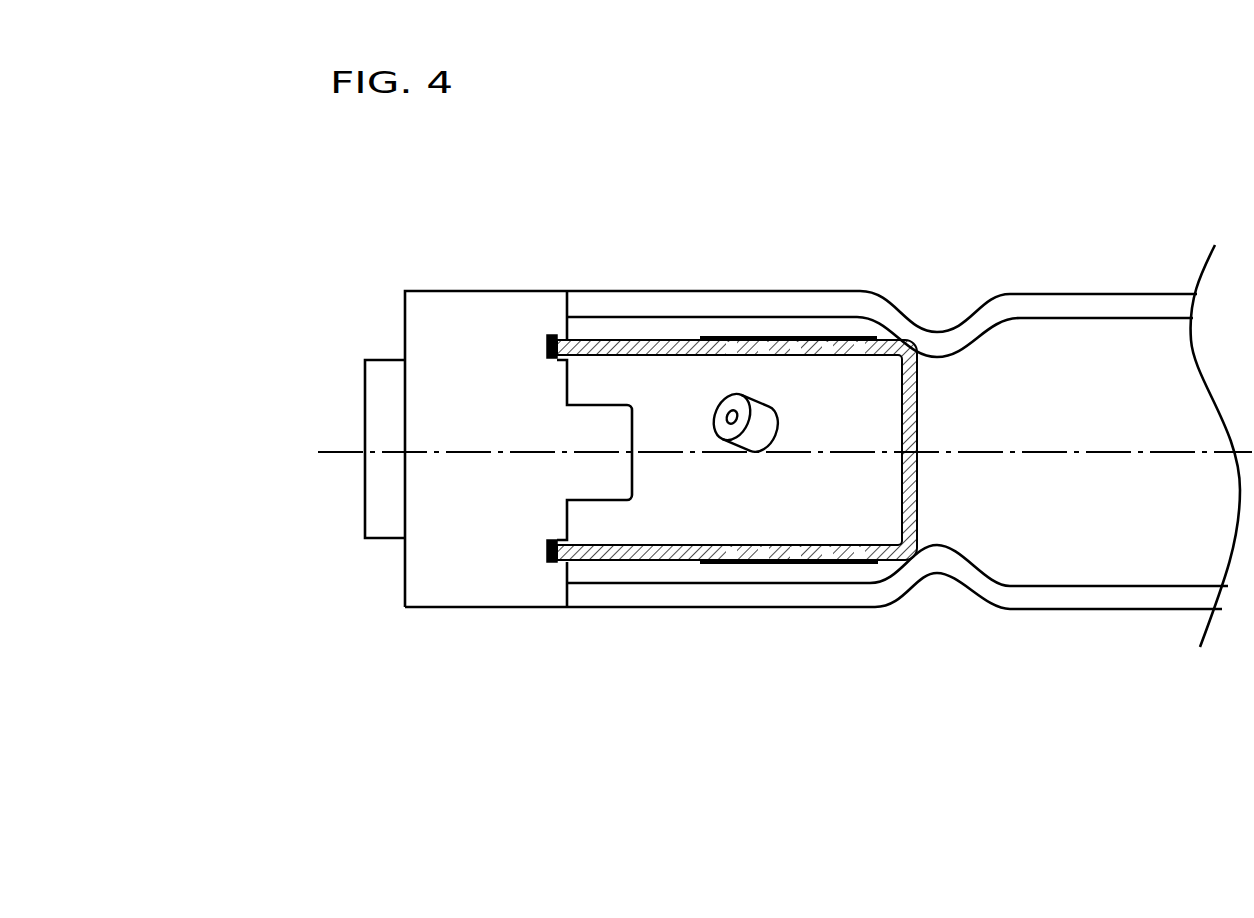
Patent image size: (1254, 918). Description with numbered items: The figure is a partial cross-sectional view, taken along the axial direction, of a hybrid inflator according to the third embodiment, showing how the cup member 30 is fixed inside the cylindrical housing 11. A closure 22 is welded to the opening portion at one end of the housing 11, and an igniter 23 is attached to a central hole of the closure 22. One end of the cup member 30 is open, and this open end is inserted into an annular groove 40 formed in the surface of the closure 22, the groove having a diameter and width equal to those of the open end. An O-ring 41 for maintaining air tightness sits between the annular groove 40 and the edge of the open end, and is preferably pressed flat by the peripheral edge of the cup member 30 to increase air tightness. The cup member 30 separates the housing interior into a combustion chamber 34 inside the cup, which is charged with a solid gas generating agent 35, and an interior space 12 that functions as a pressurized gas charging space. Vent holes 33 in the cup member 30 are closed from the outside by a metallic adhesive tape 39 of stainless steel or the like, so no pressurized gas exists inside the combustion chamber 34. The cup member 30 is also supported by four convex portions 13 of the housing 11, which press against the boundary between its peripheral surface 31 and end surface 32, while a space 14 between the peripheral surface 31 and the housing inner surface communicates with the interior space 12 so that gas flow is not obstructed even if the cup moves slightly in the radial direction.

The cylindrical housing 11 is at (1100, 294).
The interior space 12 is at (1168, 568).
The convex portions 13 is at (937, 357).
The space 14 is at (827, 570).
The closure 22 is at (432, 326).
The igniter 23 is at (385, 390).
The cup member 30 is at (637, 559).
The peripheral surface 31 is at (687, 558).
The end surface 32 is at (918, 492).
The vent holes 33 is at (750, 562).
The combustion chamber 34 is at (695, 531).
The solid gas generating agent 35 is at (762, 423).
The metallic adhesive tape 39 is at (796, 338).
The annular groove 40 is at (567, 562).
The O-ring 41 is at (551, 336).